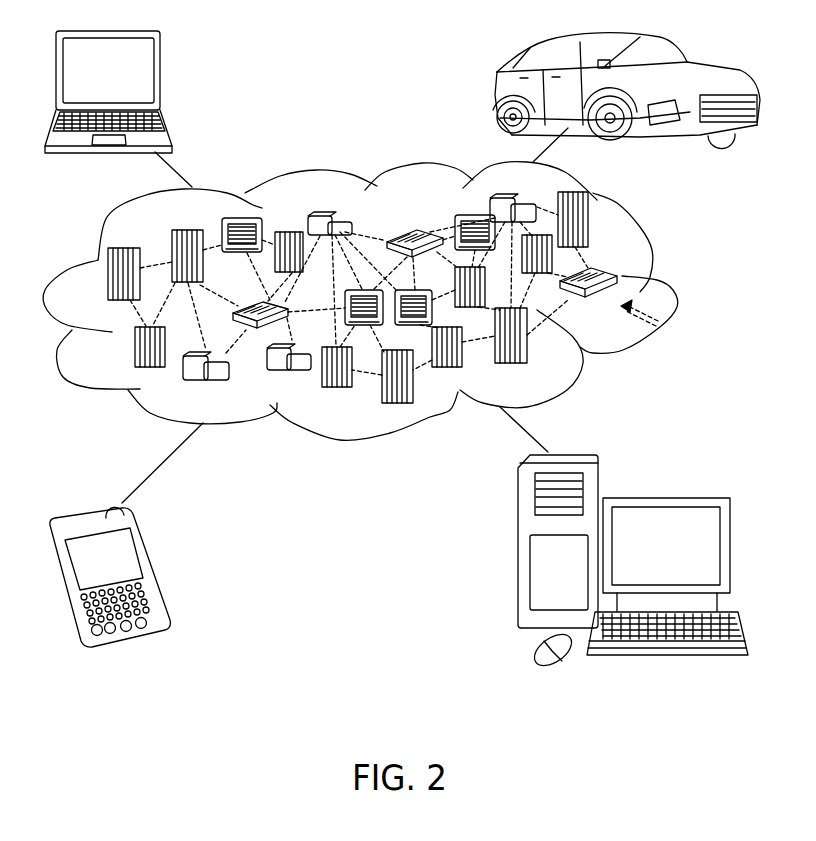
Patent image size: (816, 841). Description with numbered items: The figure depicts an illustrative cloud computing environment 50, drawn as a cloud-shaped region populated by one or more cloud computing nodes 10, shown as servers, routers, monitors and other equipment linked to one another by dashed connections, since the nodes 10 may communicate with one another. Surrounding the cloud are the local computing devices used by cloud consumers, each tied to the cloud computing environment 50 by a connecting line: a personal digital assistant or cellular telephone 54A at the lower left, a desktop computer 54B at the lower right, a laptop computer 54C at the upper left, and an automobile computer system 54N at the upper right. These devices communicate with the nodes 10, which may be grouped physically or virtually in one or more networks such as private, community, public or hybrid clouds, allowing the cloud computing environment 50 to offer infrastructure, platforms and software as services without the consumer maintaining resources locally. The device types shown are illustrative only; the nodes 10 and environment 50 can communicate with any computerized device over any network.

The cloud computing nodes 10 is at (655, 323).
The cloud computing environment 50 is at (662, 281).
The personal digital assistant (PDA) or cellular telephone 54A is at (153, 569).
The desktop computer 54B is at (662, 497).
The laptop computer 54C is at (163, 77).
The automobile computer system 54N is at (494, 88).